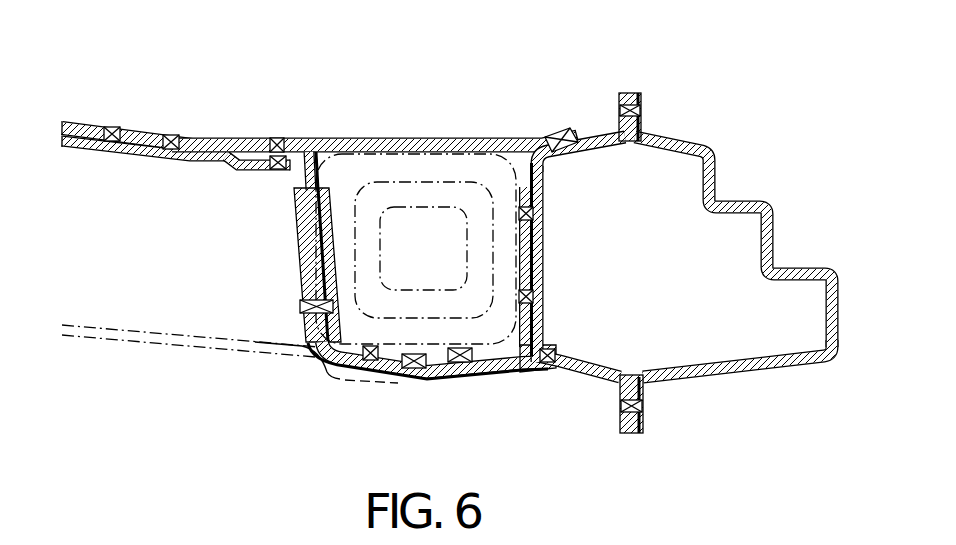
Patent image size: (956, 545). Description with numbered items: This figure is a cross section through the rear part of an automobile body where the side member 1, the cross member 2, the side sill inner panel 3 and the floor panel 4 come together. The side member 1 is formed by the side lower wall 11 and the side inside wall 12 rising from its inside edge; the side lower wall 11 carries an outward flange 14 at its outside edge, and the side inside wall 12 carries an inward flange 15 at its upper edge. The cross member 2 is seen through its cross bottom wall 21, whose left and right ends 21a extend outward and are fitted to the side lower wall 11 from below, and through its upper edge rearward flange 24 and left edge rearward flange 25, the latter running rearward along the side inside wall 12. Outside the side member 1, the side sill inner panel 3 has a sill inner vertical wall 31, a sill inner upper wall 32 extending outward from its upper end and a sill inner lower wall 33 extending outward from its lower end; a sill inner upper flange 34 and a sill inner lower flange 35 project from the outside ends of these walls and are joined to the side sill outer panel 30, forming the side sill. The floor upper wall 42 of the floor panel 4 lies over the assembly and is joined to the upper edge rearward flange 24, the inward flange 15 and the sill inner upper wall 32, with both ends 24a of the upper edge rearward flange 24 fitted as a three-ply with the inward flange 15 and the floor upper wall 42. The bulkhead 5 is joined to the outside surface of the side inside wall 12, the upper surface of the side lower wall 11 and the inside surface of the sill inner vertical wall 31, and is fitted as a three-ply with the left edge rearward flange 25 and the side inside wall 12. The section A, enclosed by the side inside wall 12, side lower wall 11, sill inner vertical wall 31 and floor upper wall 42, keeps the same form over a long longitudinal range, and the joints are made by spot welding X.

The side member 1 is at (375, 278).
The cross member 2 is at (201, 356).
The side sill inner panel 3 is at (580, 262).
The floor panel 4 is at (83, 119).
The bulkhead 5 is at (403, 160).
The side lower wall 11 is at (452, 371).
The side inside wall 12 is at (310, 150).
The outward flange 14 is at (537, 371).
The inward flange 15 is at (240, 137).
The cross bottom wall 21 is at (273, 352).
The left and right ends of the cross bottom wall 21a is at (355, 377).
The upper edge rearward flange 24 is at (175, 160).
The both ends of the upper edge rearward flange 24a is at (250, 172).
The left edge rearward flange 25 is at (300, 250).
The side sill outer panel 30 is at (682, 258).
The sill inner vertical wall 31 is at (545, 266).
The sill inner upper wall 32 is at (600, 157).
The sill inner lower wall 33 is at (600, 356).
The sill inner upper flange 34 is at (618, 100).
The sill inner lower flange 35 is at (620, 416).
The floor upper wall 42 is at (496, 137).
The section A is at (431, 238).
The spot welding X is at (188, 139).